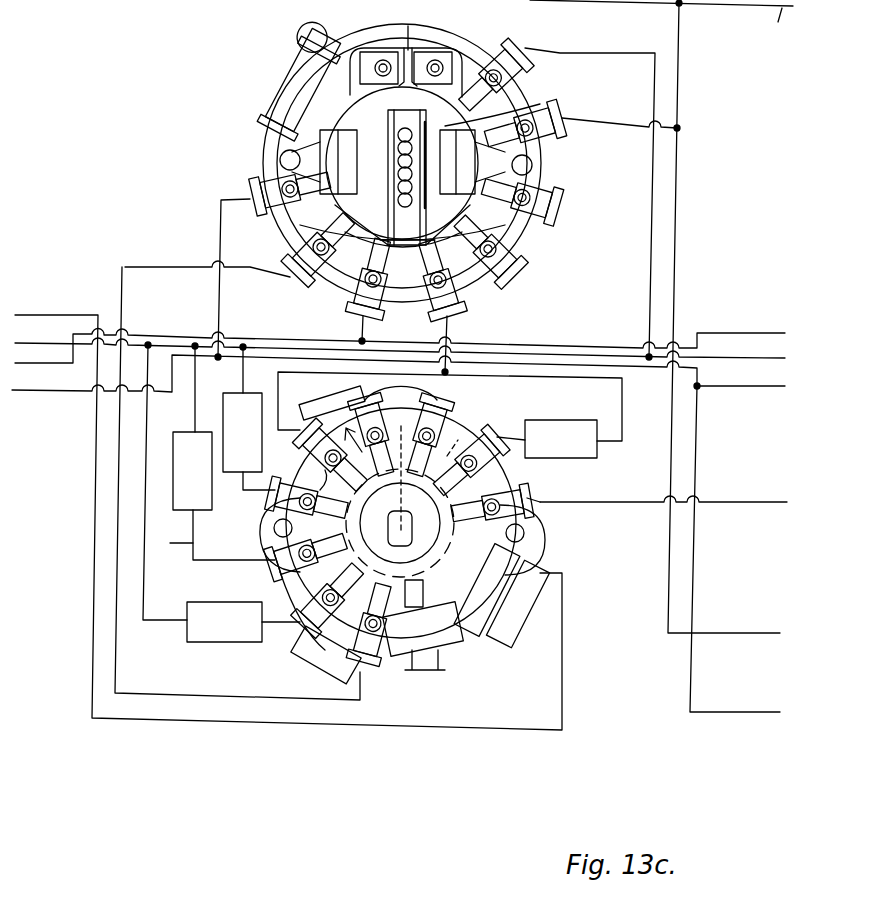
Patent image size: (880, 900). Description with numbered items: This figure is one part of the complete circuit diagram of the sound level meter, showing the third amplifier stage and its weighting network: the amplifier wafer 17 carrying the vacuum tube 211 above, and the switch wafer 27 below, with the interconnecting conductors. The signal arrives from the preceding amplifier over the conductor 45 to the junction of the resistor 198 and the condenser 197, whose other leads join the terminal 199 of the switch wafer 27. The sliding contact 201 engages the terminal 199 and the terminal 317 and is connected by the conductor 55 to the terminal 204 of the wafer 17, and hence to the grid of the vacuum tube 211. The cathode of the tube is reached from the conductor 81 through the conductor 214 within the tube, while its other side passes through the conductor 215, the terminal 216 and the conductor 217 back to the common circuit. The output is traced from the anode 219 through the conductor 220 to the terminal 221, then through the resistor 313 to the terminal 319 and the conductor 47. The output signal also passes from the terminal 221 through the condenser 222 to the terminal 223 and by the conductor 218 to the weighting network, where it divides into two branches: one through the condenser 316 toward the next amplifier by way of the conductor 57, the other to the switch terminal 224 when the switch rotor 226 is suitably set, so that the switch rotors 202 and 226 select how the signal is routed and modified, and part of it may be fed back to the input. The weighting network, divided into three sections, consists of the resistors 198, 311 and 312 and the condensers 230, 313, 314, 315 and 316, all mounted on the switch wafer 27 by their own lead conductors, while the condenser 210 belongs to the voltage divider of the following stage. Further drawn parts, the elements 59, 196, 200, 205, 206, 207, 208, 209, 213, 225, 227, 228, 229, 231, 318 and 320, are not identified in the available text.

The wafer 17 is at (458, 34).
The switch wafer 27 is at (456, 430).
The conductor 45 is at (32, 316).
The conductor 47 is at (758, 633).
The conductor 55 is at (245, 271).
The conductor 57 is at (750, 502).
The lead 59 is at (362, 688).
The conductor 81 is at (219, 218).
The contact 196 is at (530, 554).
The condenser 197 is at (528, 543).
The resistor 198 is at (505, 631).
The terminal 199 is at (490, 641).
The contact 200 is at (438, 669).
The sliding contact 201 is at (410, 569).
The switch rotor 202 is at (330, 523).
The terminal 204 is at (295, 281).
The pivot 205 is at (280, 159).
The brush holder 206 is at (280, 186).
The solenoid 207 is at (300, 58).
The contacts 208 is at (406, 51).
The brush holder 209 is at (505, 53).
The condenser 210 is at (24, 343).
The vacuum tube 211 is at (394, 113).
The core 213 is at (426, 122).
The conductor 214 is at (384, 120).
The conductor 215 is at (396, 262).
The terminal 216 is at (378, 312).
The conductor 217 is at (364, 333).
The conductor 218 is at (450, 405).
The anode 219 is at (490, 149).
The conductor 220 is at (525, 224).
The terminal 221 is at (566, 206).
The condenser 222 is at (514, 282).
The terminal 223 is at (451, 297).
The switch terminal 224 is at (298, 447).
The contact 225 is at (324, 481).
The switch rotor 226 is at (494, 510).
The brush holder 227 is at (307, 556).
The lead 228 is at (268, 556).
The lead 229 is at (169, 544).
The condenser 230 is at (224, 453).
The lead 231 is at (195, 384).
The resistor 311 is at (332, 678).
The resistor 312 is at (345, 394).
The resistor 313 is at (442, 648).
The condenser 314 is at (221, 493).
The condenser 315 is at (249, 418).
The condenser 316 is at (512, 461).
The terminal 317 is at (345, 612).
The contact 318 is at (527, 195).
The terminal 319 is at (565, 121).
The pivot 320 is at (544, 158).